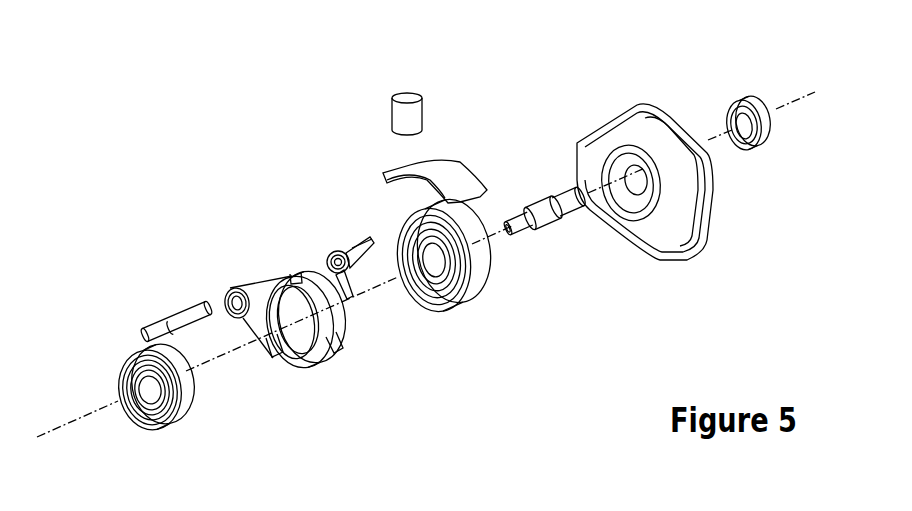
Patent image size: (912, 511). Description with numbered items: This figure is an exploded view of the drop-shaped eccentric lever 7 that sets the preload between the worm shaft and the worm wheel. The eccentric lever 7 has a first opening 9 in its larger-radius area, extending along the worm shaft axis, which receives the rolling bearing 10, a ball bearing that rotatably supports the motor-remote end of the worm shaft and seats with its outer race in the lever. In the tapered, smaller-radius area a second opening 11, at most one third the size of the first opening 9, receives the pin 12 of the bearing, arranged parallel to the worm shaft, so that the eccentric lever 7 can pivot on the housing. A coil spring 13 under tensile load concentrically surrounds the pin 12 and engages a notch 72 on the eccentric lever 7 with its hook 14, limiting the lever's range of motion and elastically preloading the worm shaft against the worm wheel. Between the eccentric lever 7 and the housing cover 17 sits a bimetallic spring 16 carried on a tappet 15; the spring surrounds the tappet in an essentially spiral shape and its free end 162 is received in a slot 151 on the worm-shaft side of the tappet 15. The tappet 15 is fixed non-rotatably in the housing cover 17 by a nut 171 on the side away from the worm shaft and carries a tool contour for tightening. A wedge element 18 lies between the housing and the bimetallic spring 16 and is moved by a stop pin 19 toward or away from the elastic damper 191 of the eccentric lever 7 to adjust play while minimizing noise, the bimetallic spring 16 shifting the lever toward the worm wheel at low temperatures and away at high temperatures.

The eccentric lever 7 is at (276, 322).
The first opening 9 is at (307, 344).
The rolling bearing 10 is at (185, 413).
The second opening 11 is at (233, 287).
The pin 12 is at (170, 327).
The coil spring 13 is at (355, 223).
The hook 14 is at (360, 243).
The tappet 15 is at (547, 253).
The bimetallic spring 16 is at (450, 290).
The housing cover 17 is at (658, 227).
The wedge element 18 is at (453, 173).
The stop pin 19 is at (405, 107).
The notch 72 is at (282, 278).
The slot 151 is at (518, 237).
The free end 162 is at (435, 312).
The nut 171 is at (770, 123).
The elastic damper 191 is at (300, 271).